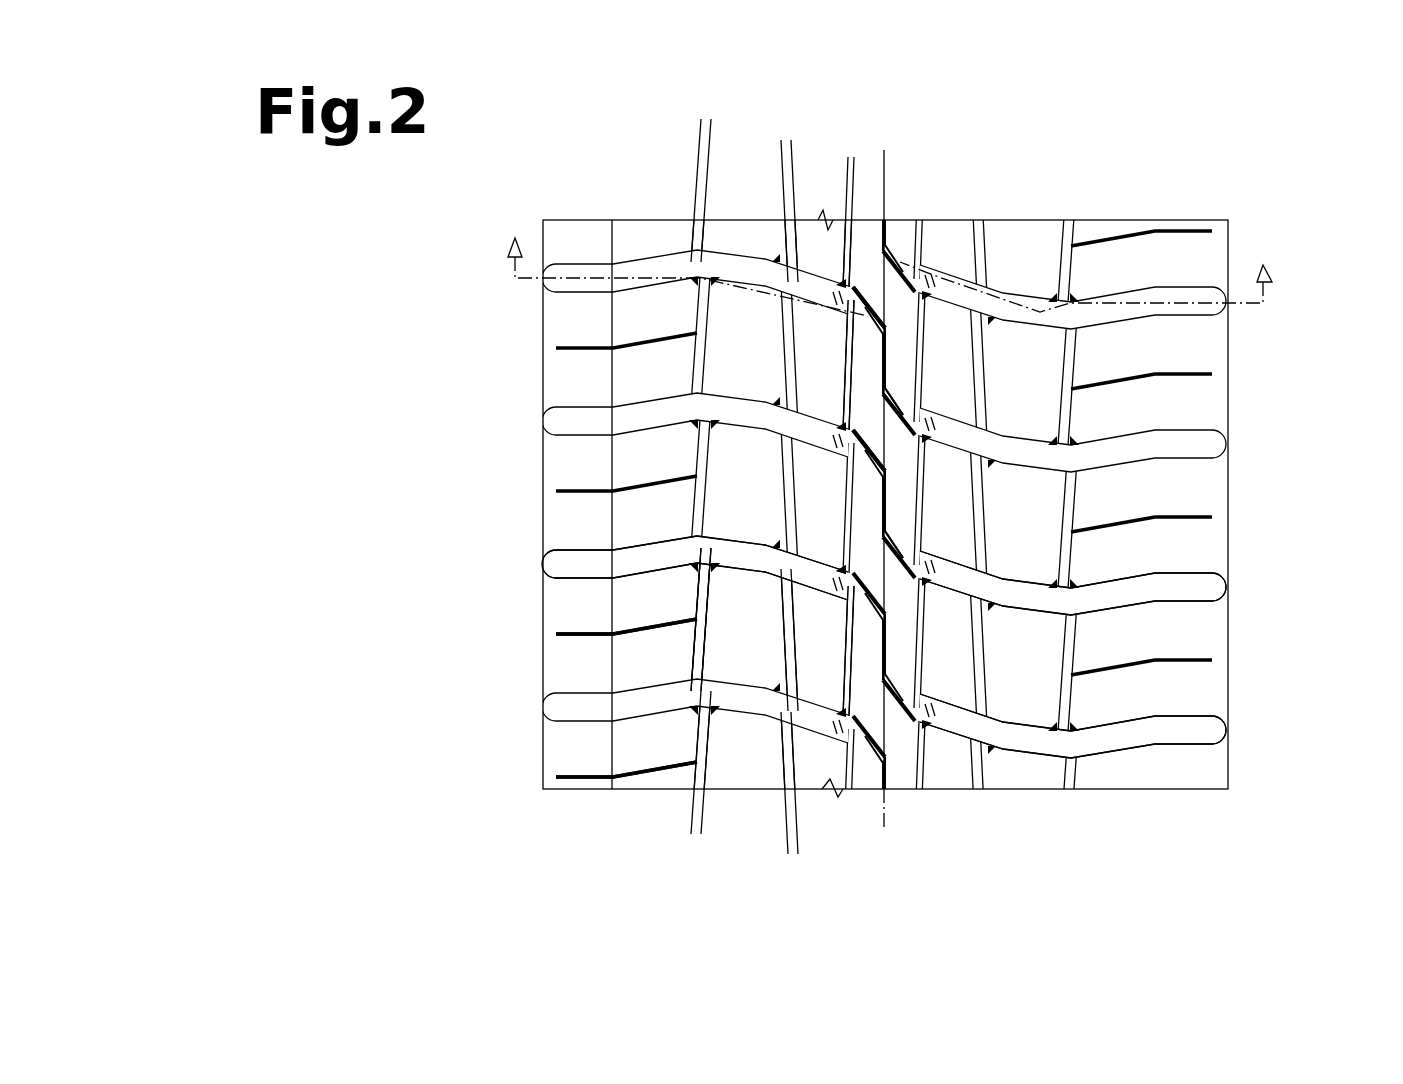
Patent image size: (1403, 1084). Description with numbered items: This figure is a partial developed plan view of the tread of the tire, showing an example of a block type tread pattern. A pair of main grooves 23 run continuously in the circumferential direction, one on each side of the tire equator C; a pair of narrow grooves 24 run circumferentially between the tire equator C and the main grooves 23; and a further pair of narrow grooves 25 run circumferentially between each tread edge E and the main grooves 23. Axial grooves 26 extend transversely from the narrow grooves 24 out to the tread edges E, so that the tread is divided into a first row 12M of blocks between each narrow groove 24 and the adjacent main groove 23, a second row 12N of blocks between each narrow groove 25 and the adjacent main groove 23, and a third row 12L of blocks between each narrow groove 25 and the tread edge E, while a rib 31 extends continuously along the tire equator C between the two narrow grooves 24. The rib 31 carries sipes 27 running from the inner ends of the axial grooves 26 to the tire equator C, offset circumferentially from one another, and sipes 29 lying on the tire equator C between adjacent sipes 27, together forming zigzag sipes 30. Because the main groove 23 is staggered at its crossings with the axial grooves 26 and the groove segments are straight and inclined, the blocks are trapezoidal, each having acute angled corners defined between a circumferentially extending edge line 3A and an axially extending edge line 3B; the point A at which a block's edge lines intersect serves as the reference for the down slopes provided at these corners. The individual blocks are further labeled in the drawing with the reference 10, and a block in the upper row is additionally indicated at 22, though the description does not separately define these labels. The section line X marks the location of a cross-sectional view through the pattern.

The third row of blocks 12L is at (637, 203).
The first row of blocks 12M is at (818, 203).
The second row of blocks 12N is at (722, 205).
The block 22 is at (742, 242).
The rib 31 is at (889, 471).
The section line X- X is at (886, 266).
The sipes 27 is at (868, 320).
The sipes 29 is at (884, 358).
The zigzag sipes 30 is at (446, 377).
The point A is at (703, 552).
The axial grooves 26 is at (637, 552).
The block 10 is at (777, 573).
The tread edge E is at (615, 607).
The narrow grooves 25 is at (700, 743).
The main grooves 23 is at (772, 760).
The narrow grooves 24 is at (857, 767).
The tire equator C is at (885, 800).
The circumferentially extending edge line 3A is at (1118, 797).
The axially extending edge line 3B is at (1060, 713).